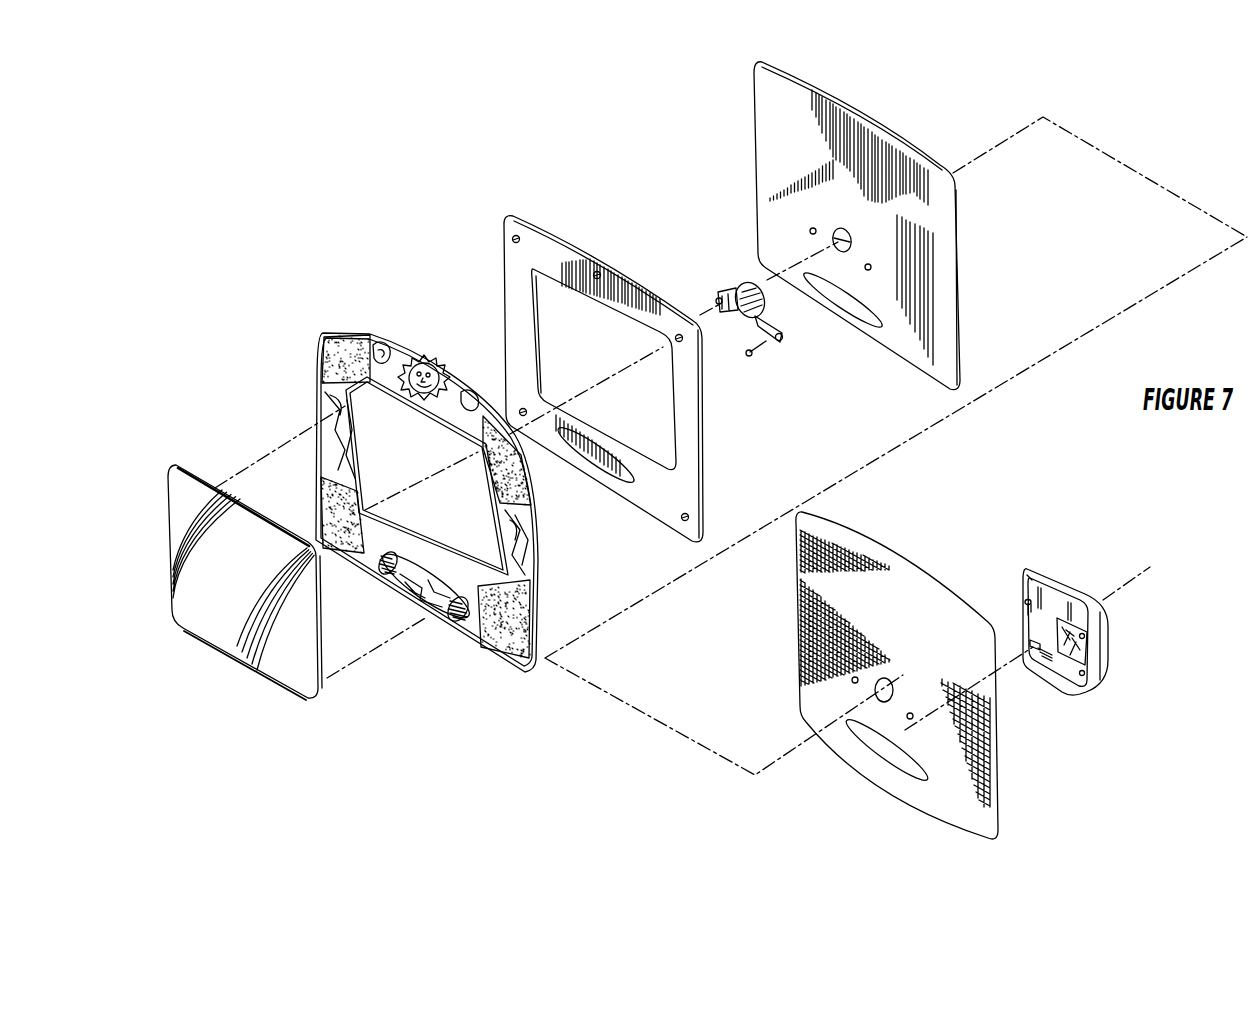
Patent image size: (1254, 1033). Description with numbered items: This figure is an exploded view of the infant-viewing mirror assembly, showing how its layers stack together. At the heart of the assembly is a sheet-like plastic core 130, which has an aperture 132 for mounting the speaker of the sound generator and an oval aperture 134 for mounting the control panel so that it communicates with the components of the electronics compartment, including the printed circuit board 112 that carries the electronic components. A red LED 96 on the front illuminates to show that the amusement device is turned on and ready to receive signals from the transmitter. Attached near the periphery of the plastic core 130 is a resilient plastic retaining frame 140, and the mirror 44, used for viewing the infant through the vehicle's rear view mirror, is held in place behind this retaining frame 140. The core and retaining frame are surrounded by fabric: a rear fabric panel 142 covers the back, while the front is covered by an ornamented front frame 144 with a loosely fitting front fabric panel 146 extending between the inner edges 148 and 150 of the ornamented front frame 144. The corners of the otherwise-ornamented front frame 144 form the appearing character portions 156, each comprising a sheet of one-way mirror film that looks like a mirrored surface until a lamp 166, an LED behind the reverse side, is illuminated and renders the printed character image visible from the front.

The mirror 44 is at (258, 657).
The red LED 96 is at (1087, 649).
The printed circuit board 112 is at (1072, 652).
The plastic core 130 is at (857, 227).
The aperture 132 is at (843, 251).
The oval aperture 134 is at (870, 309).
The retaining frame 140 is at (572, 358).
The rear fabric panel 142 is at (945, 613).
The ornamented front frame 144 is at (427, 478).
The front fabric panel 146 is at (462, 514).
The inner edge 148 is at (427, 408).
The inner edge 150 is at (403, 553).
The appearing character portions 156 is at (296, 355).
The lamp 166 is at (513, 238).